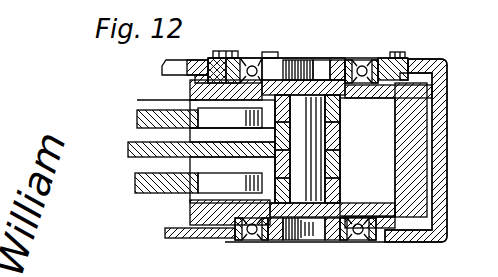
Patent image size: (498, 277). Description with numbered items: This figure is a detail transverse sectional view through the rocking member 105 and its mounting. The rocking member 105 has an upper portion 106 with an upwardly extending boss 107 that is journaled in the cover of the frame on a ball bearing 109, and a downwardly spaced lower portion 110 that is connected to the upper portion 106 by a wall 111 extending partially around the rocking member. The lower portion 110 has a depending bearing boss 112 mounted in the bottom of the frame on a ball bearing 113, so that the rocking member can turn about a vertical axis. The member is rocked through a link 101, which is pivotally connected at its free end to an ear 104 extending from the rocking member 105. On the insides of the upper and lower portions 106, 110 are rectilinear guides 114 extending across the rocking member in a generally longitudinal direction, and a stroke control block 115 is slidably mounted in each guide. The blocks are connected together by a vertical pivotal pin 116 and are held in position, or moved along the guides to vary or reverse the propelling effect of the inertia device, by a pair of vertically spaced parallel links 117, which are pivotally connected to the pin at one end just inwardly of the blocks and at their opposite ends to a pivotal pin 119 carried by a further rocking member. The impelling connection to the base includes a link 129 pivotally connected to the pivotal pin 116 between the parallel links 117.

The link 101 is at (148, 109).
The ear 104 is at (142, 112).
The rocking member 105 is at (190, 201).
The upper portion 106 is at (190, 90).
The boss 107 is at (350, 60).
The ball bearing 109 is at (262, 58).
The lower portion 110 is at (185, 228).
The wall 111 is at (447, 90).
The bearing boss 112 is at (337, 243).
The ball bearing 113 is at (263, 243).
The rectilinear guides 114 is at (283, 95).
The stroke control block 115 is at (342, 138).
The pivotal pin 116 is at (305, 98).
The parallel links 117 is at (378, 130).
The pivotal pin 119 is at (460, 5).
The link 129 is at (195, 135).